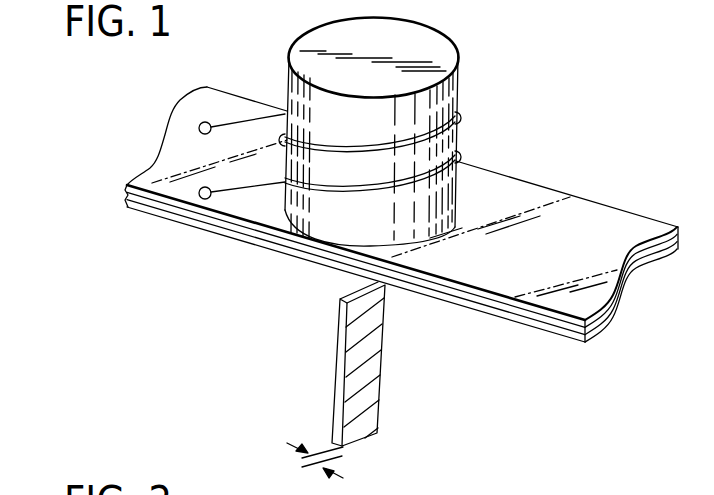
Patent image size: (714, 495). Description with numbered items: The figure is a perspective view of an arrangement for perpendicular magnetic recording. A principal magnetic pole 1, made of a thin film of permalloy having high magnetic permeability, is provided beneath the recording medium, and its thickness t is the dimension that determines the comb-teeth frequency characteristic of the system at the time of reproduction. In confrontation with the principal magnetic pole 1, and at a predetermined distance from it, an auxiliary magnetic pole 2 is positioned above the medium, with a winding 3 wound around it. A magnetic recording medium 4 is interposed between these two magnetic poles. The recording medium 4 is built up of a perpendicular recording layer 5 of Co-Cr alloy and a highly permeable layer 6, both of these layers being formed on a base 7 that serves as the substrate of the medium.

The principal magnetic pole 1 is at (373, 378).
The auxiliary magnetic pole 2 is at (445, 187).
The winding 3 is at (207, 122).
The magnetic recording medium 4 is at (600, 195).
The perpendicular recording layer 5 is at (538, 326).
The highly permeable layer 6 is at (612, 300).
The base 7 is at (649, 228).
The thickness of the principal magnetic pole t is at (315, 463).